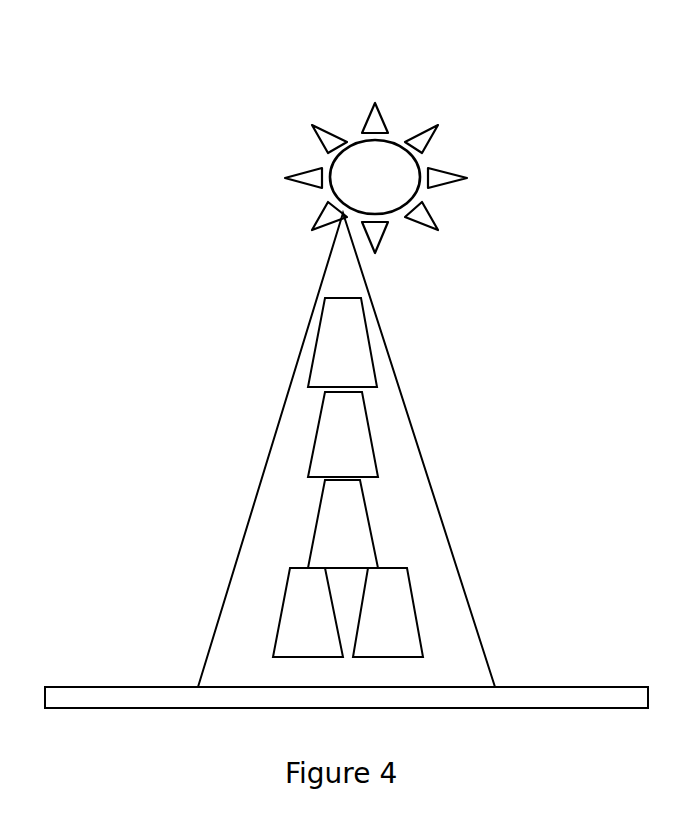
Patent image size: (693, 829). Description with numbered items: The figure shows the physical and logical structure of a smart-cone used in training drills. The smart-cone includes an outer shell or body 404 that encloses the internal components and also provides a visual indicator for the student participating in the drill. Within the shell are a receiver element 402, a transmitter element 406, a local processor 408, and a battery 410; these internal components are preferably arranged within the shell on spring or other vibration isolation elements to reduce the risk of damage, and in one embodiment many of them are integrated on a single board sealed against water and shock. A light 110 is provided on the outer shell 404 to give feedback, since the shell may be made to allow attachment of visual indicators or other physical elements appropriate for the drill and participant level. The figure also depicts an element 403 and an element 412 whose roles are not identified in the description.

The light source (sun) 110 is at (385, 164).
The first stacked object 402 is at (392, 339).
The light cone / illumination field 403 is at (360, 450).
The support surface 404 is at (355, 668).
The second stacked object 406 is at (281, 434).
The third stacked object 408 is at (416, 524).
The fourth stacked object 410 is at (225, 603).
The fifth stacked object 412 is at (433, 612).